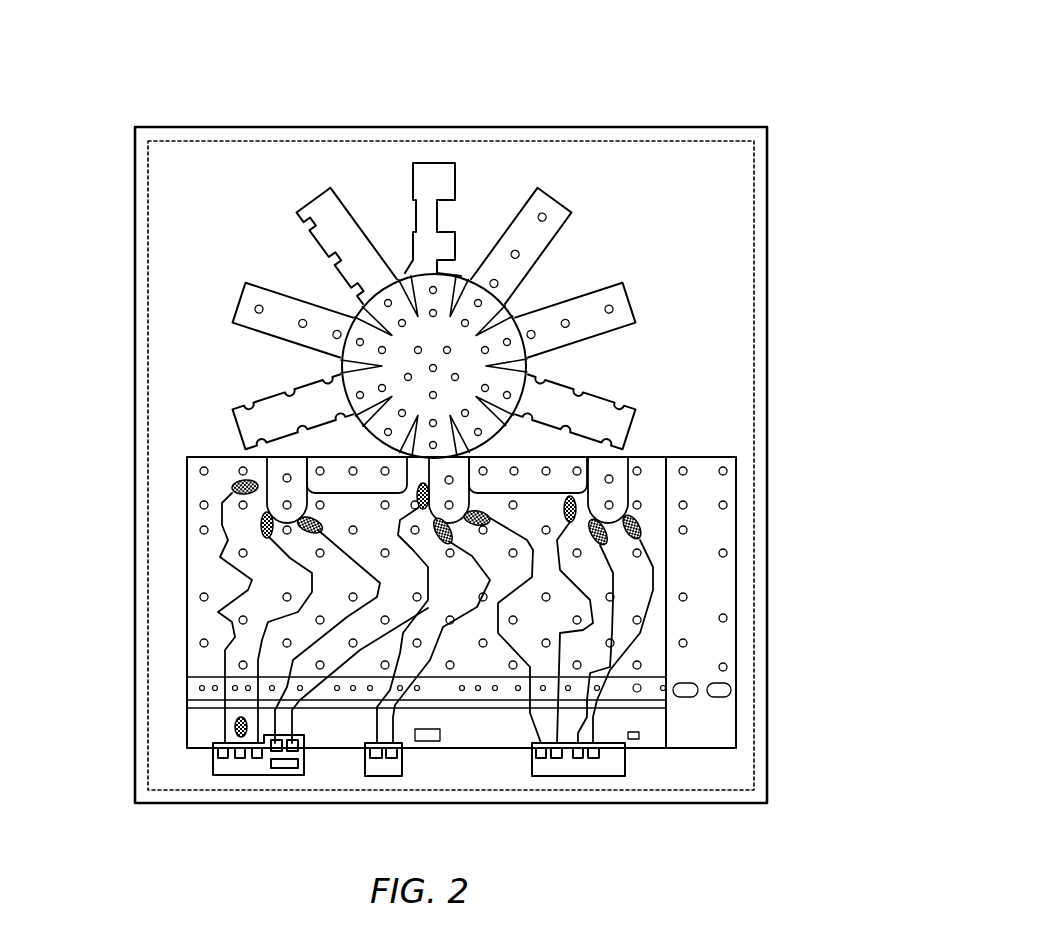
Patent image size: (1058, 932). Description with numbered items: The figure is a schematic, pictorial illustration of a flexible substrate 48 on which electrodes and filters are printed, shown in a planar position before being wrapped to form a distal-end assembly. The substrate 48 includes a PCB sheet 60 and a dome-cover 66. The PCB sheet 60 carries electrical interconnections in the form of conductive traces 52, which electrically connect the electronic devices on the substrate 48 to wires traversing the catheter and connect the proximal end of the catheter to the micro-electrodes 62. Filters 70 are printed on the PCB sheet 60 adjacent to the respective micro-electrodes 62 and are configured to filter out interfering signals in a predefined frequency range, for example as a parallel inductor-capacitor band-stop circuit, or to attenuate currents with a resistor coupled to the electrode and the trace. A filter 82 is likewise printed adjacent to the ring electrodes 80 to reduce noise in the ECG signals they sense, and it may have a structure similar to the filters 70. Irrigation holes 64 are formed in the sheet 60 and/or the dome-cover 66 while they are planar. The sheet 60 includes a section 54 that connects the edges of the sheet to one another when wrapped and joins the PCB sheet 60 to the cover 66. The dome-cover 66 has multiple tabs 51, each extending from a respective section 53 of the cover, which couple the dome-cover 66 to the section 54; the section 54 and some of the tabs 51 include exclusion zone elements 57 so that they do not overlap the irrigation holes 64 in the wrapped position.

The flexible substrate 48 is at (863, 110).
The tabs 51 is at (538, 195).
The section of cover 53 is at (343, 366).
The exclusion zone elements 57 is at (613, 313).
The dome-cover 66 is at (535, 373).
The irrigation holes 64 is at (241, 470).
The micro-electrodes 62 is at (470, 498).
The filters 70 is at (440, 493).
The PCB sheet 60 is at (205, 623).
The conductive traces 52 is at (258, 650).
The ring electrodes 80 is at (235, 727).
The filter 82 is at (215, 750).
The section 54 is at (695, 737).